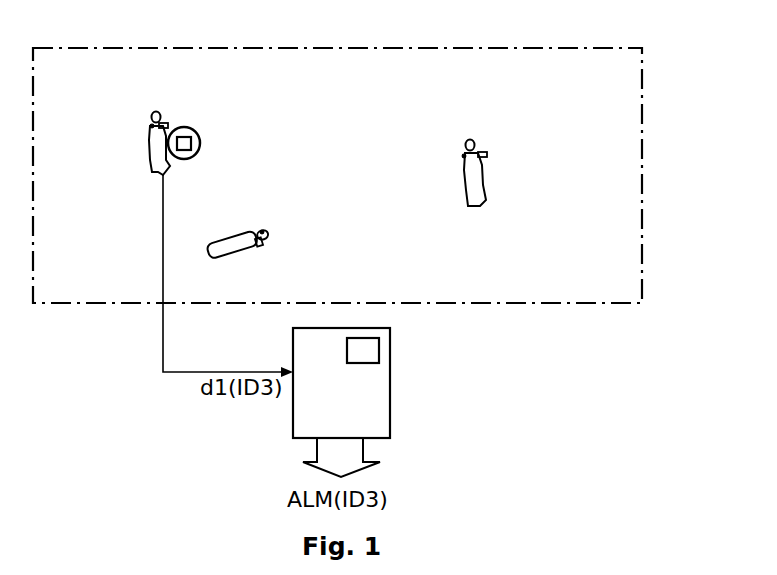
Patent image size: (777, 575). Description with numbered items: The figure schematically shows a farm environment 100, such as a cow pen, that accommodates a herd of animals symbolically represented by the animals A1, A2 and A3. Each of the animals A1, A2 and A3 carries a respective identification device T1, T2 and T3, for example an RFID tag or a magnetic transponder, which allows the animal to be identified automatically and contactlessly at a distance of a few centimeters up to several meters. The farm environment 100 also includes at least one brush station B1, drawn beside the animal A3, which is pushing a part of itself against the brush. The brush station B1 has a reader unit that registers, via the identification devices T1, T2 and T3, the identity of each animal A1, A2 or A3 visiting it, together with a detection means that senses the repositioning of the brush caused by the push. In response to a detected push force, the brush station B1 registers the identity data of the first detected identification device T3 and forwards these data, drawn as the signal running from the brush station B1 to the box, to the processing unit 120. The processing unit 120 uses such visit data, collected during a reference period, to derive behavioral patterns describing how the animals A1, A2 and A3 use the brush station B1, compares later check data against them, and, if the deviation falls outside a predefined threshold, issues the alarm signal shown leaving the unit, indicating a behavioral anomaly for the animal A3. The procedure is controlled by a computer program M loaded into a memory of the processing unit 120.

The farm environment 100 is at (642, 30).
The processing unit 120 is at (292, 420).
The computer program M is at (398, 342).
The animal A1 is at (467, 170).
The animal A2 is at (223, 242).
The animal A3 is at (150, 155).
The identification device T1 is at (493, 126).
The identification device T2 is at (292, 256).
The identification device T3 is at (137, 97).
The brush station B1 is at (200, 118).